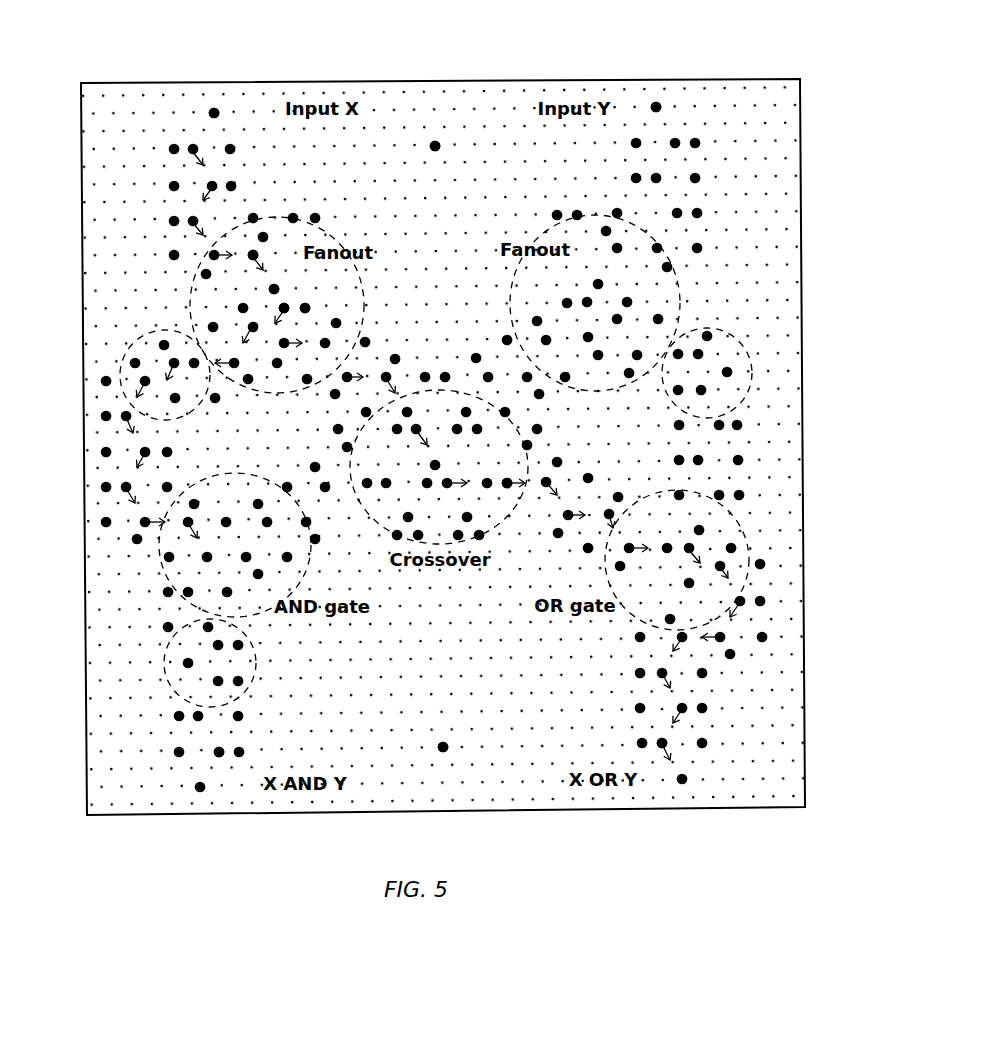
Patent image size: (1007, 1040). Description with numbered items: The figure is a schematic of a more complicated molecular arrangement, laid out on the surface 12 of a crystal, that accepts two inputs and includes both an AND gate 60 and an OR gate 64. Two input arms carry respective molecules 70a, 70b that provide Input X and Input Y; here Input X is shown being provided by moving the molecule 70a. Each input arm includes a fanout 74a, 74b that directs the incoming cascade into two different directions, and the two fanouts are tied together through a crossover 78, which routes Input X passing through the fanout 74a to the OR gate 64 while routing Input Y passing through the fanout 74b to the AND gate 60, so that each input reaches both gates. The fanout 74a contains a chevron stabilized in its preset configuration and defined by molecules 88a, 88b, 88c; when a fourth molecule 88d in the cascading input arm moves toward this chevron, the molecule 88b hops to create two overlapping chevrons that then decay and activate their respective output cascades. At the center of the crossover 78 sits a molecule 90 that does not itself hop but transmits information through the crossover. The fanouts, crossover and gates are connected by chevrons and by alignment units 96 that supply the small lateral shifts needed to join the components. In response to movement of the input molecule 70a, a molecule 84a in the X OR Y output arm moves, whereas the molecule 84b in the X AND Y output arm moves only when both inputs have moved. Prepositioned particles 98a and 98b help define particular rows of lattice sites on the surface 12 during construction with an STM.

The surface 12 is at (85, 545).
The AND gate 60 is at (177, 502).
The OR gate 64 is at (751, 550).
The molecule 70a is at (205, 128).
The molecule 70b is at (656, 107).
The fanout 74a is at (195, 300).
The fanout 74b is at (684, 292).
The crossover 78 is at (500, 537).
The molecule 84a is at (662, 744).
The molecule 84b is at (219, 752).
The molecule 88a is at (284, 300).
The molecule 88b is at (290, 308).
The molecule 88c is at (305, 308).
The molecule 88d is at (262, 250).
The molecule 90 is at (430, 458).
The alignment unit 96 is at (119, 396).
The prepositioned particle 98a is at (437, 144).
The prepositioned particle 98b is at (448, 750).